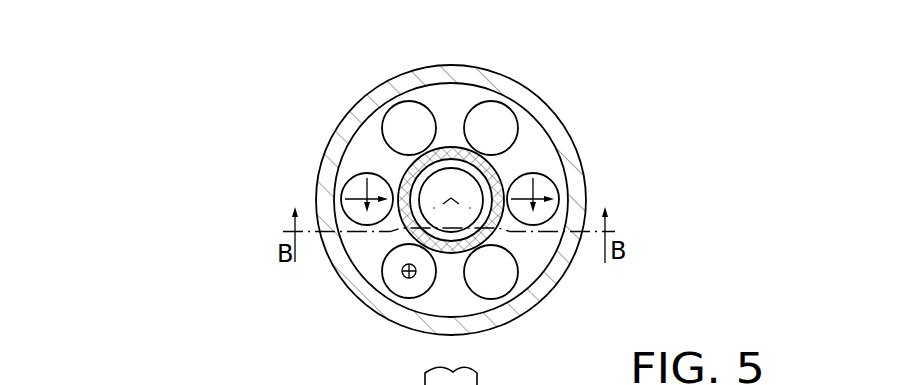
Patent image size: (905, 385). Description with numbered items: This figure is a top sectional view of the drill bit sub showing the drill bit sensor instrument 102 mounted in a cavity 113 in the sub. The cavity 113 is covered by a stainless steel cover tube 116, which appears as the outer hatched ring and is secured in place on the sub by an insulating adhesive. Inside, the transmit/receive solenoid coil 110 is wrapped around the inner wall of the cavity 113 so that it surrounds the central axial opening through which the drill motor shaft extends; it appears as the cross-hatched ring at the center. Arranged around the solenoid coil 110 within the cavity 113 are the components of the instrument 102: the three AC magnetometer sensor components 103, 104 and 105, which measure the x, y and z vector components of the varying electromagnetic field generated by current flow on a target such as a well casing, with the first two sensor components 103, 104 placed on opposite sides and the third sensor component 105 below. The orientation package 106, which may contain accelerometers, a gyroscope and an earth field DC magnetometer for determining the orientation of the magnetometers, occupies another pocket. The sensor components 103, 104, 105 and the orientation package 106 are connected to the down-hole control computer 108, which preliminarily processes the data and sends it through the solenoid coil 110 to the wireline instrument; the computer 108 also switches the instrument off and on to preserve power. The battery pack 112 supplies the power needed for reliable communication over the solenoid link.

The drill bit sensor instrument 102 is at (528, 70).
The stainless steel cover tube 116 is at (486, 72).
The transmit/receive solenoid coil 110 is at (507, 168).
The cavity 113 is at (454, 296).
The down-hole control computer 108 is at (407, 113).
The orientation package 106 is at (513, 125).
The magnetometer sensor component 103 is at (356, 184).
The magnetometer sensor component 104 is at (550, 182).
The magnetometer sensor component 105 is at (403, 281).
The battery pack 112 is at (495, 281).